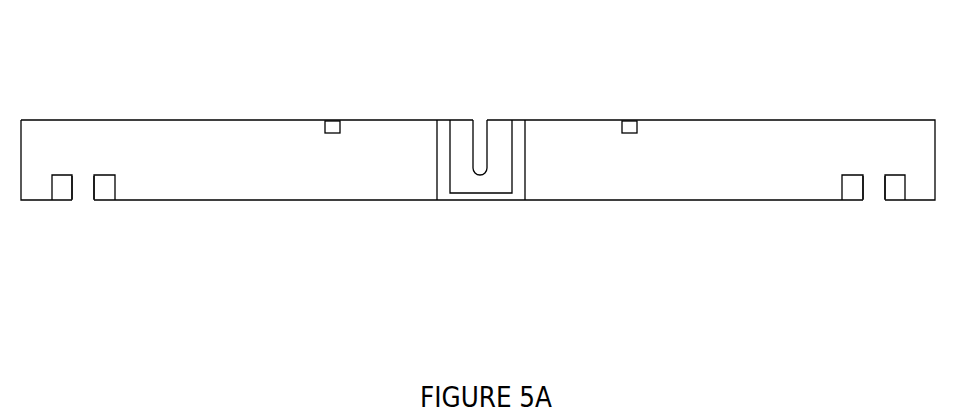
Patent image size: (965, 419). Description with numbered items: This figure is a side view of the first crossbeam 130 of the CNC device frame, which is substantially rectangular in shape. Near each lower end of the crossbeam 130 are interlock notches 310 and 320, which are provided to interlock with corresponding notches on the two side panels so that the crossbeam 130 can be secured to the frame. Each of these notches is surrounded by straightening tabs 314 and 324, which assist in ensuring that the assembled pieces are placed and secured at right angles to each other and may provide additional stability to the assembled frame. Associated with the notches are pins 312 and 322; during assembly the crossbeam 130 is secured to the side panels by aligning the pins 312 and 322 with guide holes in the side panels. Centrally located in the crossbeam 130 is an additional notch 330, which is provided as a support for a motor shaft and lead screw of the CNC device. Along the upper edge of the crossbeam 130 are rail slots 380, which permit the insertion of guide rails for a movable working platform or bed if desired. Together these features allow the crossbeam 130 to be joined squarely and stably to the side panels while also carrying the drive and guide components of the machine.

The crossbeam 130 is at (77, 135).
The interlock notch 310 is at (82, 195).
The pin 312 is at (82, 177).
The straightening tab 314 is at (103, 190).
The interlock notch 320 is at (868, 200).
The pin 322 is at (872, 183).
The straightening tab 324 is at (890, 197).
The notch 330 is at (481, 163).
The rail slot 380 is at (332, 122).